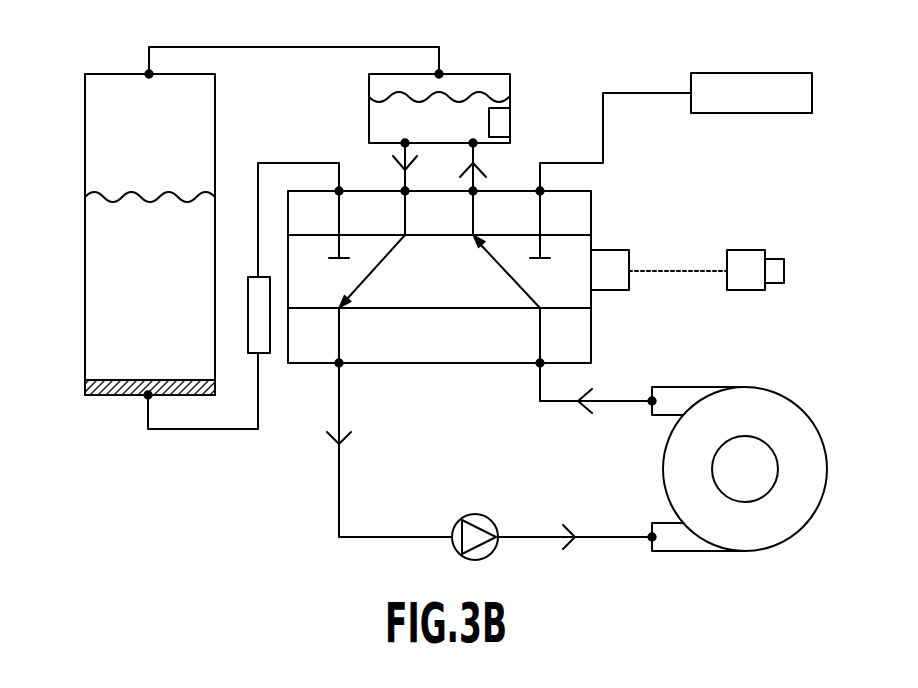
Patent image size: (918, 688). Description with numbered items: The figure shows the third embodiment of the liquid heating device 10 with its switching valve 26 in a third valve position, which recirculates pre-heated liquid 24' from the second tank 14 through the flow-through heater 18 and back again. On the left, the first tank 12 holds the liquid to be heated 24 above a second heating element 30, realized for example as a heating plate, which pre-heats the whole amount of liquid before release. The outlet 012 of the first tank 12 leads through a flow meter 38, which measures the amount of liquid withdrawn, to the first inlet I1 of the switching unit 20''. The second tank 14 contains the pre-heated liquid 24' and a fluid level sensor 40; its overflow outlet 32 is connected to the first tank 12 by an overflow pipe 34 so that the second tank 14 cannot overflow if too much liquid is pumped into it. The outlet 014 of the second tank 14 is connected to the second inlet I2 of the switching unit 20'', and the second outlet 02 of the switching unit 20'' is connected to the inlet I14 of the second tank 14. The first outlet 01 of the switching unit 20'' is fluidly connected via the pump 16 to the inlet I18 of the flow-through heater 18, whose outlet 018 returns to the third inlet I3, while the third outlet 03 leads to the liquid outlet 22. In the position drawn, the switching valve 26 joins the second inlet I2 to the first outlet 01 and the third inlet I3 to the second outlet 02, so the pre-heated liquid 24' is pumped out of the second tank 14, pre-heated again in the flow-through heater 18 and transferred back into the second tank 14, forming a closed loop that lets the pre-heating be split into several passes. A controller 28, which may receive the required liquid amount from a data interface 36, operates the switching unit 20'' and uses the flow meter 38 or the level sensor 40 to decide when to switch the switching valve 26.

The liquid heating device 10 is at (104, 46).
The first tank 12 is at (85, 303).
The liquid to be heated 24 is at (126, 230).
The second heating element 30 is at (95, 387).
The outlet of the first tank 012 is at (184, 391).
The flow meter 38 is at (258, 300).
The overflow pipe or tube 34 is at (277, 45).
The overflow outlet 32 is at (447, 66).
The second tank 14 is at (510, 78).
The pre-heated liquid 24' is at (404, 110).
The fluid level sensor 40 is at (498, 128).
The outlet of the second tank 014 is at (387, 165).
The inlet of the second tank I14 is at (487, 165).
The switching unit 20'' is at (486, 277).
The switching valve 26 is at (588, 338).
The first inlet of the switching unit I1 is at (350, 181).
The second inlet of the switching unit I2 is at (418, 181).
The second outlet of the switching unit 02 is at (489, 181).
The third outlet of the switching unit 03 is at (555, 181).
The first outlet of the switching unit 01 is at (353, 375).
The third inlet of the switching unit I3 is at (555, 375).
The controller 28 is at (612, 258).
The data interface 36 is at (746, 258).
The liquid outlet 22 is at (735, 87).
The pump 16 is at (480, 555).
The flow-through heater 18 is at (787, 412).
The outlet of the flow-through heater 018 is at (637, 417).
The inlet of the flow-through heater I18 is at (634, 554).